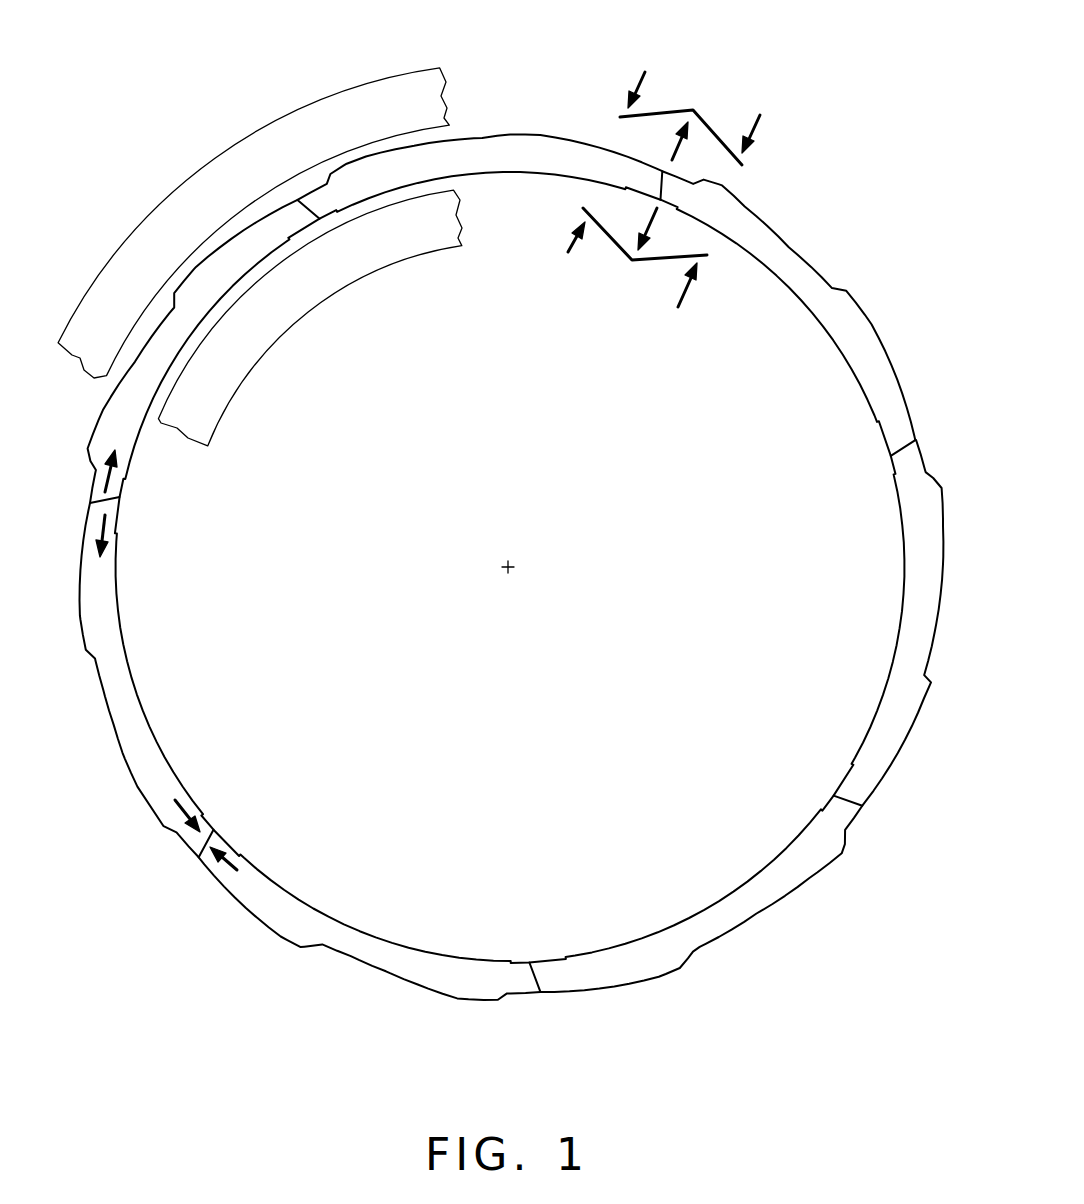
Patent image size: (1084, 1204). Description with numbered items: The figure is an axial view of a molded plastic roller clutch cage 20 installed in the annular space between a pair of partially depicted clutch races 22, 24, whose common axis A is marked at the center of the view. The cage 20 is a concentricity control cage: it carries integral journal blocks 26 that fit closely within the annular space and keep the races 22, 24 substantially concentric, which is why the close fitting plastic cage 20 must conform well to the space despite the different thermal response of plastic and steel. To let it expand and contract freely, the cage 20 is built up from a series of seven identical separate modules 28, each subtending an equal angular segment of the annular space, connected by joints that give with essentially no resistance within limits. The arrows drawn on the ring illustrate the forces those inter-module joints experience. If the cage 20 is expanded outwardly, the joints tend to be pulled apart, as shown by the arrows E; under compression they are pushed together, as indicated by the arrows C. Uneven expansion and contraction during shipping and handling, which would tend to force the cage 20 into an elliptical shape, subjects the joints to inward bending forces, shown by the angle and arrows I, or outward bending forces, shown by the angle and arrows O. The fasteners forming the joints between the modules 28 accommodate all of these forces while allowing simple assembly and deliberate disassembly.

The roller clutch cage 20 is at (512, 509).
The clutch race 22 is at (360, 253).
The clutch race 24 is at (148, 240).
The journal blocks 26 is at (497, 175).
The modules 28 is at (267, 216).
The outward bending forces O is at (667, 108).
The inward bending forces I is at (613, 242).
The expansion forces E is at (112, 527).
The compression forces C is at (183, 802).
The axis A is at (508, 568).